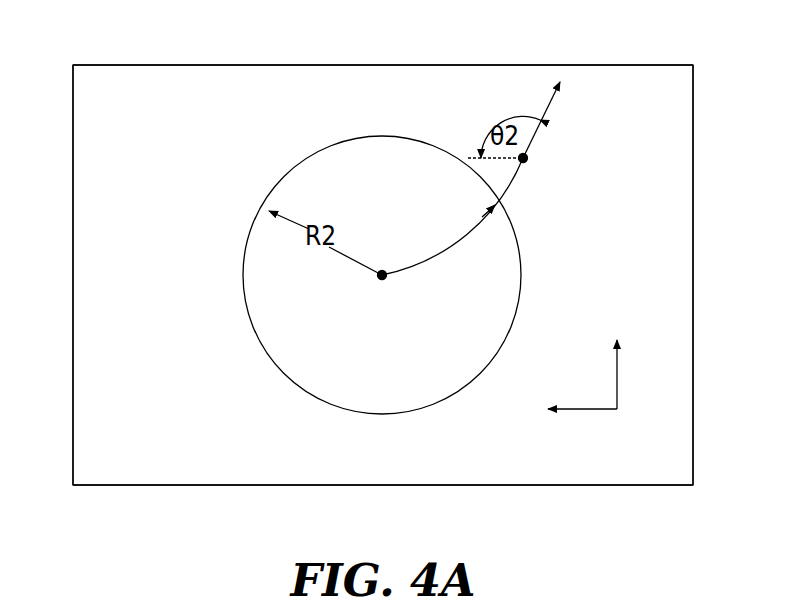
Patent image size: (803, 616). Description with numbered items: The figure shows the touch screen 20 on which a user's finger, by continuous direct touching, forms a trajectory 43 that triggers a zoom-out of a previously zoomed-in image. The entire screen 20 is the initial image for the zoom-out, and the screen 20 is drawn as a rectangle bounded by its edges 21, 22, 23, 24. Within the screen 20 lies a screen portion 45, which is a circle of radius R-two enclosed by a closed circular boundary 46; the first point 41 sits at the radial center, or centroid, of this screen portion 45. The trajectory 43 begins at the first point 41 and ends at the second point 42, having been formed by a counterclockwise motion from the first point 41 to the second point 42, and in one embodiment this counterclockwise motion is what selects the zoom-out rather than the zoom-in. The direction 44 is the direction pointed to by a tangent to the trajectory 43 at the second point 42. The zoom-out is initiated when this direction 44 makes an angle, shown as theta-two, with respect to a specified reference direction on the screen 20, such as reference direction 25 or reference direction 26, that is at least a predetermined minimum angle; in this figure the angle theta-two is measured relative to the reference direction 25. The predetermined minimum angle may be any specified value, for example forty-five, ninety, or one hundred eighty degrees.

The touch screen 20 is at (383, 275).
The bottom edge 21 is at (167, 486).
The left edge 22 is at (73, 273).
The top edge 23 is at (382, 64).
The right edge 24 is at (693, 275).
The reference direction 25 is at (593, 411).
The reference direction 26 is at (619, 378).
The first point 41 is at (376, 281).
The second point 42 is at (528, 163).
The trajectory 43 is at (442, 254).
The direction 44 is at (548, 108).
The screen portion 45 is at (383, 186).
The closed circular boundary 46 is at (306, 157).